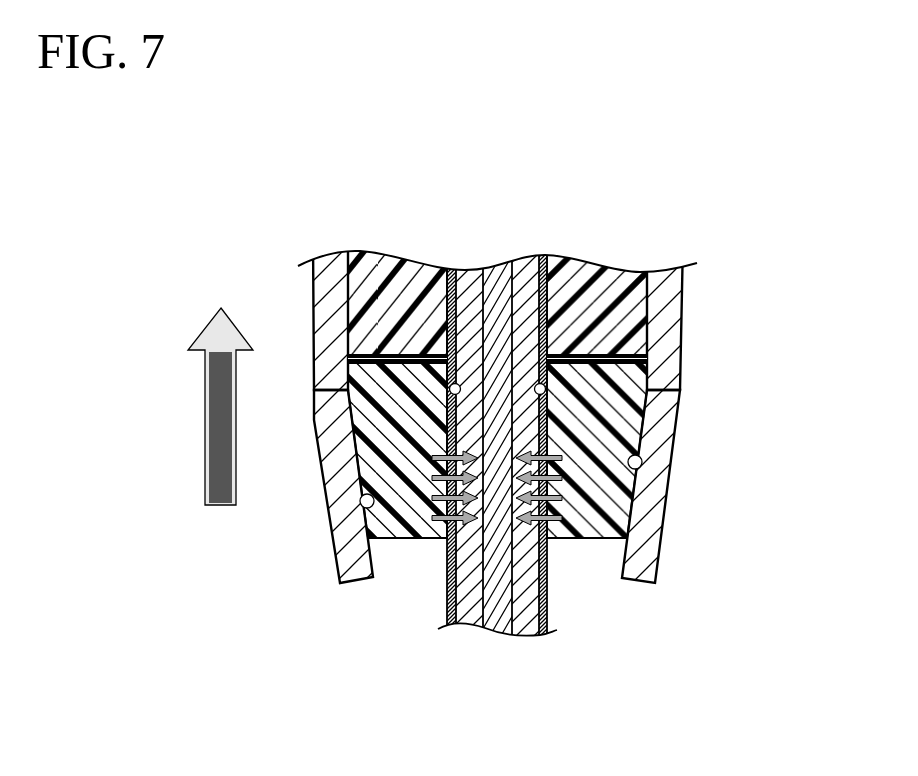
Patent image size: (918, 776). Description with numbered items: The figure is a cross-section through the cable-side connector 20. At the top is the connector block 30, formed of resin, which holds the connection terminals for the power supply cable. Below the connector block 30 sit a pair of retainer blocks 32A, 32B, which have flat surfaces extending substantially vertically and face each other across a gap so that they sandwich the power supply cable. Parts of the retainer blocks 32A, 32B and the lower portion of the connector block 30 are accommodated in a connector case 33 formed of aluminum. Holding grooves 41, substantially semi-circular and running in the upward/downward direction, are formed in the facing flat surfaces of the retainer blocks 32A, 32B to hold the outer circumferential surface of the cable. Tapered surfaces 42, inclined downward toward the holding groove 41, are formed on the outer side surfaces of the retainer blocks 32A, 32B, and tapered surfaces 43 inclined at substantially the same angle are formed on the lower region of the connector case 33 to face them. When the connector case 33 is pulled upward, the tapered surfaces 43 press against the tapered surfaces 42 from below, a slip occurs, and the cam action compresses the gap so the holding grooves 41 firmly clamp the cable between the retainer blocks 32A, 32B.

The cable-side connector 20 is at (723, 255).
The connector block 30 is at (347, 263).
The retainer block 32A is at (376, 470).
The retainer block 32B is at (620, 489).
The connector case 33 is at (310, 320).
The holding groove 41 is at (453, 394).
The tapered surface 42 is at (327, 487).
The tapered surface 43 is at (360, 501).